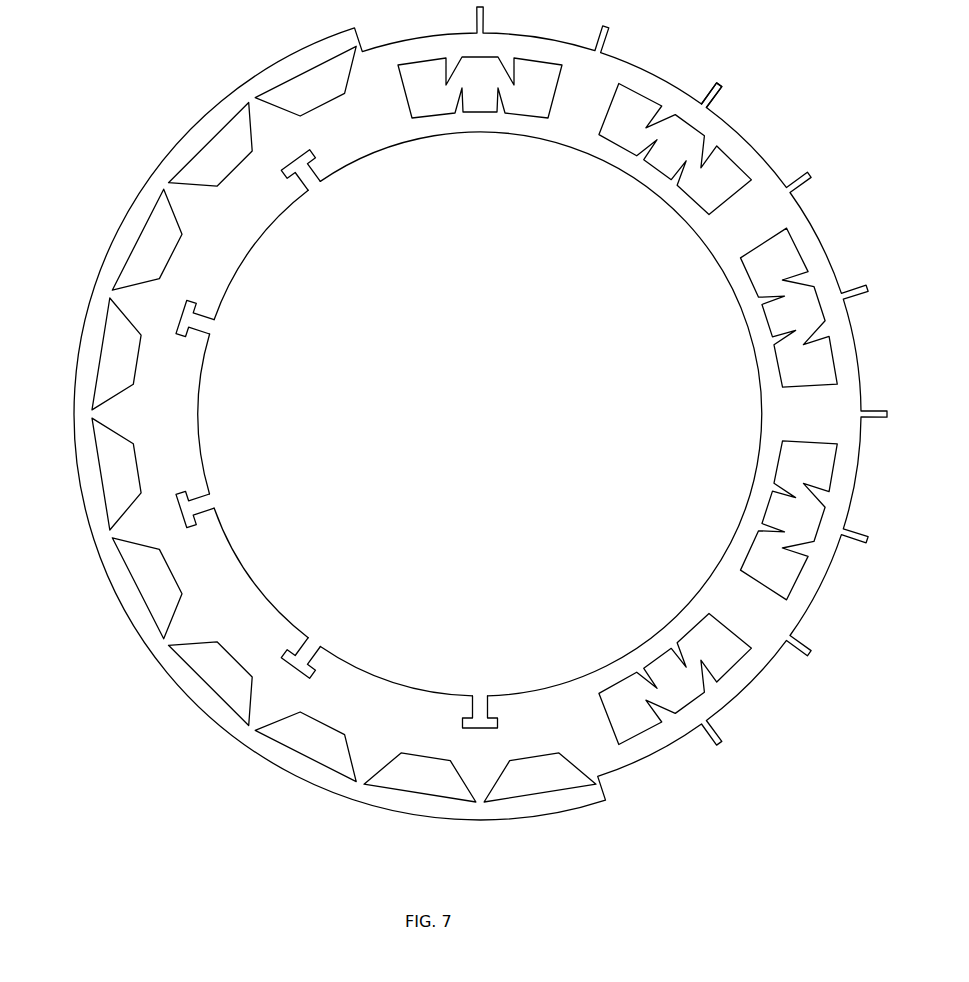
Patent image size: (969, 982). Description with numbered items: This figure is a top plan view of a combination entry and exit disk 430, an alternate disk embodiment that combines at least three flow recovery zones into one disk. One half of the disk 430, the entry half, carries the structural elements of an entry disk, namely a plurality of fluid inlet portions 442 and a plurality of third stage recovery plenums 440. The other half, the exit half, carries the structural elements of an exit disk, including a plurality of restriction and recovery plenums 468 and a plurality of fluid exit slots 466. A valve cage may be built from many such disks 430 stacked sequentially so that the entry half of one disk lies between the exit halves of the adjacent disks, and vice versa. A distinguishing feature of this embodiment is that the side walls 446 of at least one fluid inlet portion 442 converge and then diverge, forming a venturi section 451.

The combination entry and exit disk 430 is at (454, 413).
The third stage recovery plenum 440 is at (145, 248).
The fluid inlet portion 442 is at (218, 356).
The side wall 446 is at (300, 180).
The venturi section 451 is at (197, 337).
The fluid exit slot 466 is at (748, 127).
The restriction and recovery plenum 468 is at (625, 150).